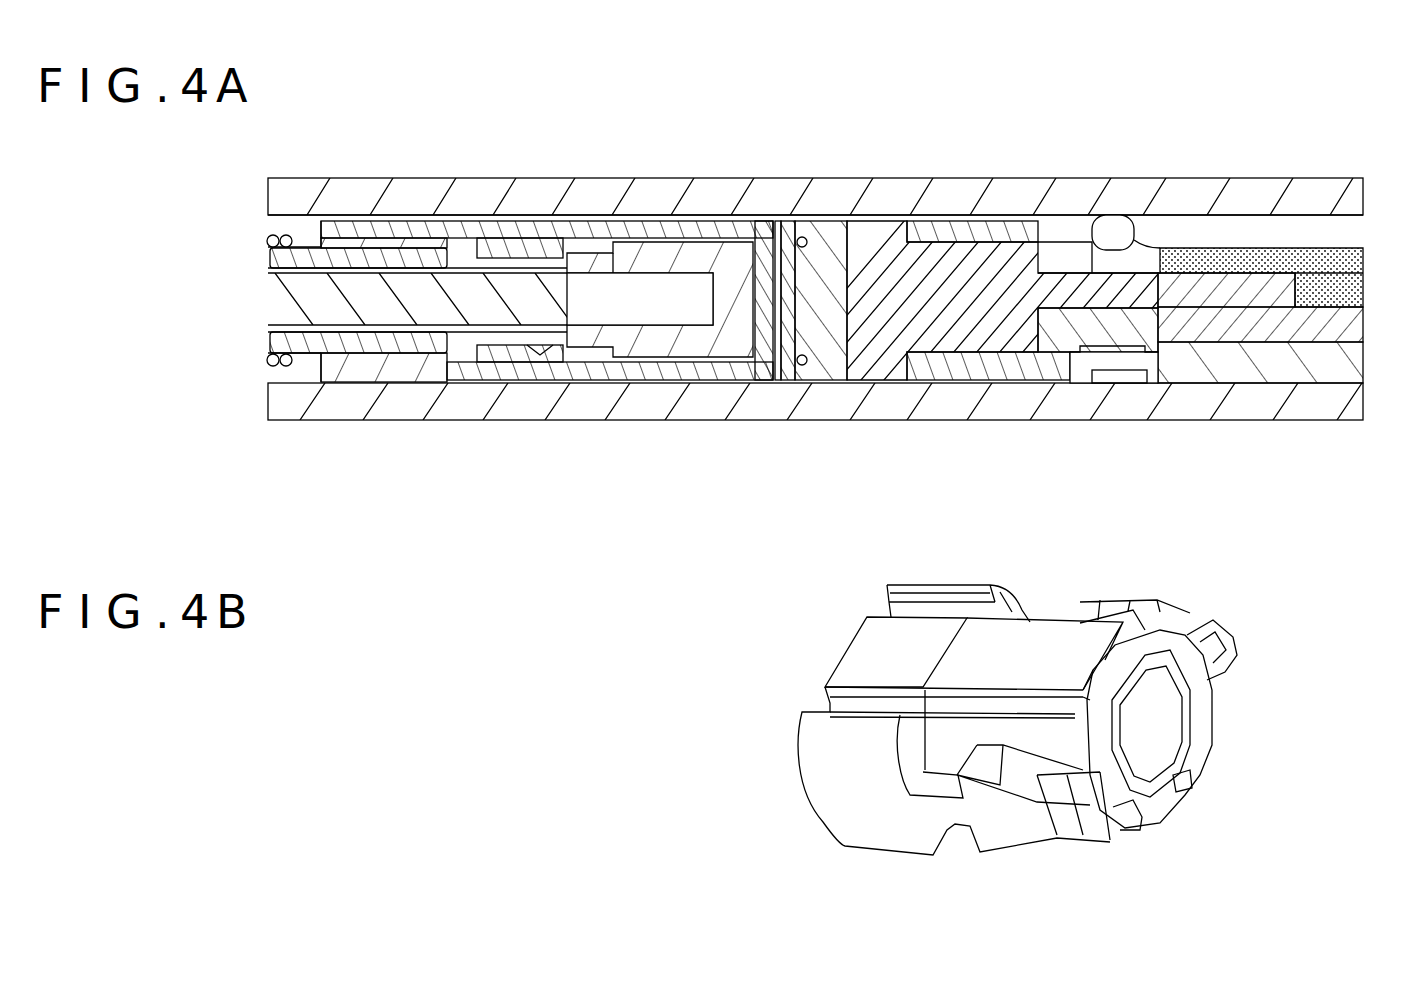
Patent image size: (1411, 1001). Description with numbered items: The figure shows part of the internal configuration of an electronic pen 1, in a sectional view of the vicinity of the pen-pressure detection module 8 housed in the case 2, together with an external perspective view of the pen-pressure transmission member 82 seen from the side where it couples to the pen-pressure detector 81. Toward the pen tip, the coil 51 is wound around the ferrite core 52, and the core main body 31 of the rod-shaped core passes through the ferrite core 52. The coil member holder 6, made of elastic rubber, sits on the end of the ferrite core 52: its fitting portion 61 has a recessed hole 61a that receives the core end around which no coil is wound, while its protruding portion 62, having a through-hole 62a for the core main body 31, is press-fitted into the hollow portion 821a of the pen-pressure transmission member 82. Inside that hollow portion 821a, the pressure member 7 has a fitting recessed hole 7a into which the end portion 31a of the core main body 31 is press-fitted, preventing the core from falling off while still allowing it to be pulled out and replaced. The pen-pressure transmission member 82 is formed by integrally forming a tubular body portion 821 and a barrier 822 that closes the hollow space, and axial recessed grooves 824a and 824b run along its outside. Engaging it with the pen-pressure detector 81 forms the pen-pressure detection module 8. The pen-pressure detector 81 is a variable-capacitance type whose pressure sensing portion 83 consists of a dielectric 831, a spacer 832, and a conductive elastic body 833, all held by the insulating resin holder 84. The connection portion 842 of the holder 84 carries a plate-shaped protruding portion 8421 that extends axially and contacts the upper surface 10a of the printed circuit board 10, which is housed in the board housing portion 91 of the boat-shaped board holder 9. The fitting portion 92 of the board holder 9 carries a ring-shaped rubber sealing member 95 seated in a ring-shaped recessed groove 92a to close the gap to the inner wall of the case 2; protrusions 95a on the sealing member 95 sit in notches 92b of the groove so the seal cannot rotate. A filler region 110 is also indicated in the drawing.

In FIG. 4A, the electronic pen 1 is at (969, 166).
In FIG. 4A, the case 2 is at (1190, 178).
In FIG. 4A, the coil member holder 6 is at (434, 372).
In FIG. 4A, the pressure member 7 is at (655, 263).
In FIG. 4A, the fitting recessed hole 7a is at (607, 277).
In FIG. 4A, the pen-pressure detection module 8 is at (608, 313).
In FIG. 4A, the board holder 9 is at (1334, 400).
In FIG. 4A, the printed circuit board 10 is at (1280, 365).
In FIG. 4A, the upper surface of the printed circuit board 10a is at (1330, 258).
In FIG. 4A, the core main body 31 is at (318, 285).
In FIG. 4A, the end portion of the core main body 31a is at (628, 305).
In FIG. 4A, the coil 51 is at (279, 235).
In FIG. 4A, the ferrite core 52 is at (376, 258).
In FIG. 4A, the fitting portion 61 is at (345, 383).
In FIG. 4A, the recessed hole 61a is at (395, 385).
In FIG. 4A, the protruding portion 62 is at (491, 362).
In FIG. 4A, the through-hole 62a is at (541, 358).
In FIG. 4A, the pen-pressure detector 81 is at (820, 292).
In FIG. 4A, the pen-pressure transmission member 82 is at (547, 304).
In FIG. 4B, the pen-pressure transmission member 82 is at (1031, 662).
In FIG. 4A, the pressure sensing portion 83 is at (820, 226).
In FIG. 4A, the holder 84 is at (897, 178).
In FIG. 4A, the board housing portion 91 is at (1218, 325).
In FIG. 4A, the fitting portion 92 is at (995, 178).
In FIG. 4A, the ring-shaped recessed groove 92a is at (1083, 257).
In FIG. 4A, the notches 92b is at (1087, 385).
In FIG. 4A, the sealing member 95 is at (1113, 215).
In FIG. 4A, the protrusions 95a is at (1080, 383).
In FIG. 4A, the filler 110 is at (1291, 260).
In FIG. 4A, the tubular body portion 821 is at (688, 382).
In FIG. 4B, the tubular body portion 821 is at (1048, 645).
In FIG. 4A, the hollow portion 821a is at (575, 238).
In FIG. 4A, the barrier 822 is at (762, 382).
In FIG. 4B, the barrier 822 is at (1156, 628).
In FIG. 4B, the recessed groove 824a is at (930, 615).
In FIG. 4B, the recessed groove 824b is at (823, 705).
In FIG. 4A, the dielectric 831 is at (842, 248).
In FIG. 4A, the spacer 832 is at (788, 221).
In FIG. 4A, the conductive elastic body 833 is at (778, 221).
In FIG. 4A, the connection portion 842 is at (1068, 230).
In FIG. 4A, the plate-shaped protruding portion 8421 is at (1233, 285).